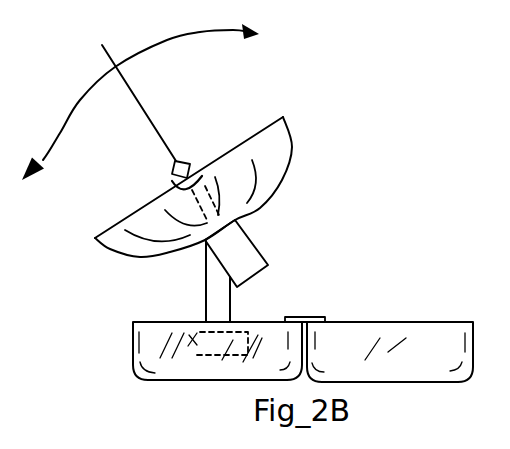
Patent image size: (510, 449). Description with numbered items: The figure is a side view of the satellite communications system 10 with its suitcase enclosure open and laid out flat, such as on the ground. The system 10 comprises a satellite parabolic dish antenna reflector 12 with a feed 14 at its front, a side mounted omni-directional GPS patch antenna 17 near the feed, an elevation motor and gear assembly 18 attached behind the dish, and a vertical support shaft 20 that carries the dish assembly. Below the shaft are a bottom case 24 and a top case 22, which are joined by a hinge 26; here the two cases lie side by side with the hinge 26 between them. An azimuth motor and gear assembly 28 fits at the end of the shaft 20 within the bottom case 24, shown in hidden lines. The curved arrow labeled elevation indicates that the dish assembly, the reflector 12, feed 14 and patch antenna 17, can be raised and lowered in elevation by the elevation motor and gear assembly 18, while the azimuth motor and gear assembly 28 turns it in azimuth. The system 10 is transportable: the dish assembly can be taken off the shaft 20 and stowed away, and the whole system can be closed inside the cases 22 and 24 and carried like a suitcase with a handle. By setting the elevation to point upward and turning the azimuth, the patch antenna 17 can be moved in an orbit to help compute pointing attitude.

The satellite communications system 10 is at (362, 177).
The satellite parabolic dish antenna reflector 12 is at (283, 117).
The feed 14 is at (185, 160).
The omni-directional GPS patch antenna 17 is at (173, 185).
The elevation motor and gear assembly 18 is at (258, 250).
The vertical support shaft 20 is at (206, 294).
The top case 22 is at (387, 322).
The bottom case 24 is at (255, 321).
The hinge 26 is at (318, 317).
The azimuth motor and gear assembly 28 is at (201, 356).